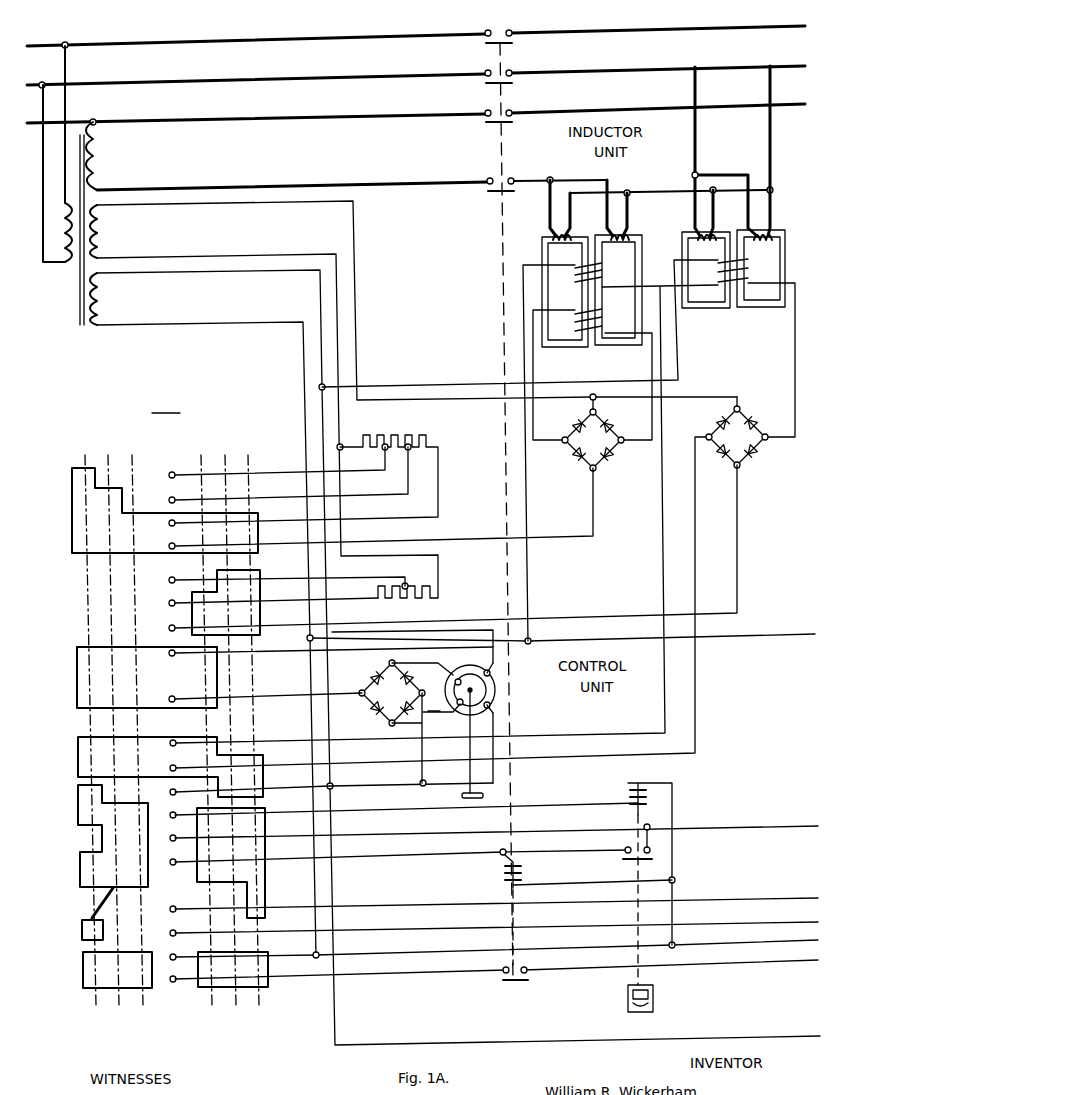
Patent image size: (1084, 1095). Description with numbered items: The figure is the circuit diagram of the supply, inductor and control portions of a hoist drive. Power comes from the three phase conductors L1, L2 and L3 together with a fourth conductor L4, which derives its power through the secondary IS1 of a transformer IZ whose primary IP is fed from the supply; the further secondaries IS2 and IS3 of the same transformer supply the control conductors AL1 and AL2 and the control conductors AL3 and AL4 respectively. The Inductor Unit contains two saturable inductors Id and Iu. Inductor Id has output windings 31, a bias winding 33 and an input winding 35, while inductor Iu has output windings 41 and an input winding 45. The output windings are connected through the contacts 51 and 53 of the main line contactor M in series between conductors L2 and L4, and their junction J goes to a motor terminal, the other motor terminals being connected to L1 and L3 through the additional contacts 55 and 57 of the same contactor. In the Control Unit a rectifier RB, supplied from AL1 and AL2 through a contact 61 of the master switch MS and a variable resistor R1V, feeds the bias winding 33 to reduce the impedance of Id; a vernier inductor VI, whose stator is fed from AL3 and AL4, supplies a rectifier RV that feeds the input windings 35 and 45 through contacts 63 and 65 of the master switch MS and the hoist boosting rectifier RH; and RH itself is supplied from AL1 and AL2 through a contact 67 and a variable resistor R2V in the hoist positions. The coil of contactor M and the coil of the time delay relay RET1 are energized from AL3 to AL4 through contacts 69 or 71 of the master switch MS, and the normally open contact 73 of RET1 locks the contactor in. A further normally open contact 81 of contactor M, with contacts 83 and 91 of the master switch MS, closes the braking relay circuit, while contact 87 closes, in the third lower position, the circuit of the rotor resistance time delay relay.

The output windings 31 is at (614, 232).
The bias winding 33 is at (603, 318).
The input winding 35 is at (603, 270).
The output windings 41 is at (762, 232).
The input winding 45 is at (750, 268).
The contact 51 is at (485, 82).
The contact 53 is at (490, 178).
The contact 55 is at (485, 42).
The contact 57 is at (485, 119).
The contact 61 is at (72, 523).
The contact 63 is at (77, 665).
The contact 65 is at (78, 750).
The contact 67 is at (262, 573).
The contact 69 is at (78, 814).
The contact 71 is at (266, 882).
The normally open contact 73 is at (627, 860).
The normally open contact 81 is at (528, 984).
The contact 83 is at (83, 968).
The contact 87 is at (82, 925).
The contact 91 is at (268, 988).
The conductor L1 is at (212, 42).
The conductor L2 is at (215, 81).
The conductor L3 is at (217, 119).
The conductor L4 is at (222, 186).
The transformer primary IP is at (66, 263).
The transformer IZ is at (82, 326).
The secondary IS1 is at (98, 162).
The secondary IS2 is at (98, 238).
The secondary IS3 is at (98, 306).
The conductor AL1 is at (242, 204).
The conductor AL2 is at (242, 256).
The conductor AL3 is at (242, 273).
The conductor AL4 is at (242, 325).
The junction J is at (773, 190).
The inductor Id is at (592, 273).
The inductor Iu is at (733, 201).
The rectifier RB is at (600, 462).
The rectifier RH is at (760, 447).
The rectifier RV is at (366, 700).
The vernier inductor VI is at (482, 670).
The variable resistor R1V is at (430, 440).
The variable resistor R2V is at (436, 599).
The master switch MS is at (173, 700).
The time delay relay RET1 is at (630, 793).
The contactor M is at (524, 872).